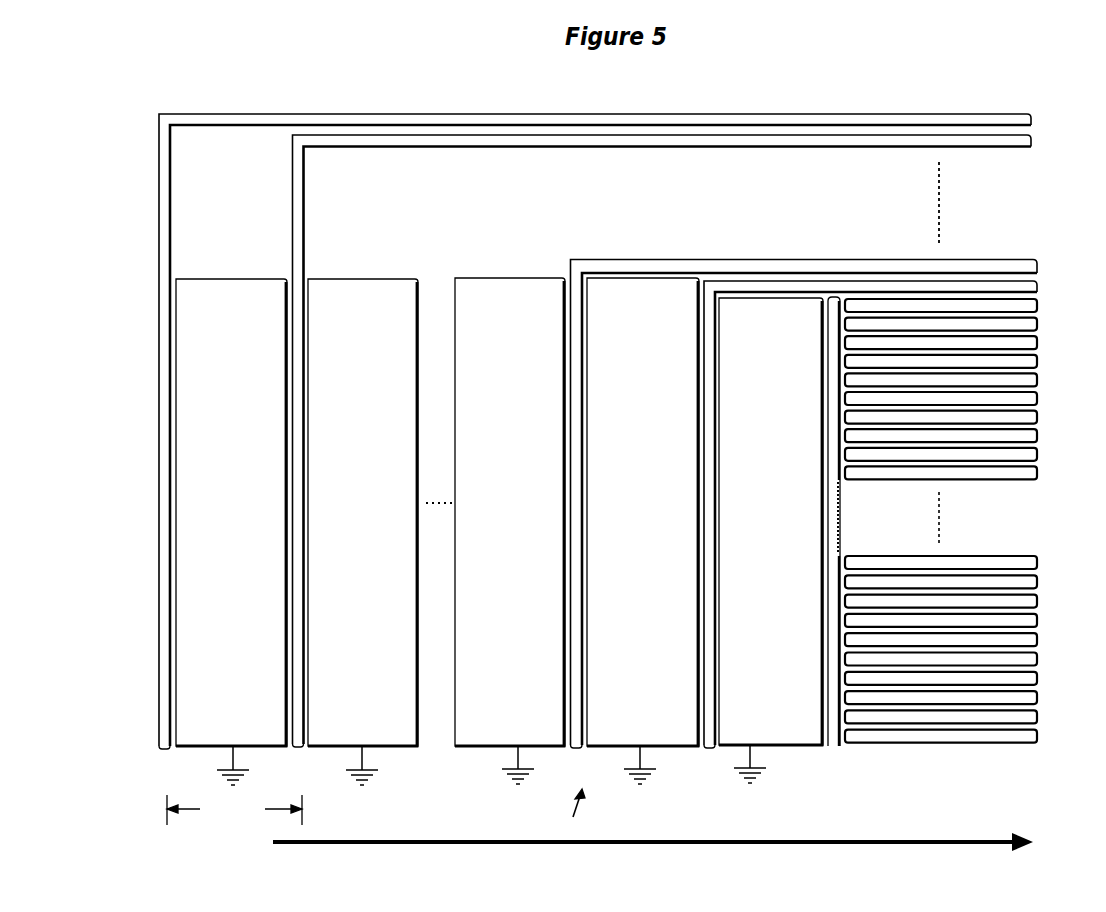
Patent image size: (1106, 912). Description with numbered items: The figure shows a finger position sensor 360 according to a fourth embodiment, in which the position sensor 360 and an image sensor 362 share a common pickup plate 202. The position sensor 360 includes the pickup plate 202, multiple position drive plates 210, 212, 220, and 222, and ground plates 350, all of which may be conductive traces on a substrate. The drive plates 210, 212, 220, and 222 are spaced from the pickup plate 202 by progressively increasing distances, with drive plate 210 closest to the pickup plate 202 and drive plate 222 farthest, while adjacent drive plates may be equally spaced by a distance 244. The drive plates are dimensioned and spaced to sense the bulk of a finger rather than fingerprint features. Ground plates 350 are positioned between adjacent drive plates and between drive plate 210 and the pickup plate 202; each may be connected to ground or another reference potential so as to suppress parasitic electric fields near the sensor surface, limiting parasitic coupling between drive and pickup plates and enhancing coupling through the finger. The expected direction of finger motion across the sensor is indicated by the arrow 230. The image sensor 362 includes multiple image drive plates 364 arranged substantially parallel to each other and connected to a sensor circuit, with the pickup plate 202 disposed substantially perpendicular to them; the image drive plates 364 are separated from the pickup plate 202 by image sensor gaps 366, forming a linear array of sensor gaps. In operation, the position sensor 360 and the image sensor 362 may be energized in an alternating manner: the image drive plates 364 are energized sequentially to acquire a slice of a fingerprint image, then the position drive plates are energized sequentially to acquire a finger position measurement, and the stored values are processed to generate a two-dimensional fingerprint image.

The pickup plate 202 is at (826, 456).
The drive plate 210 is at (704, 456).
The drive plate 212 is at (570, 456).
The drive plate 220 is at (292, 458).
The drive plate 222 is at (160, 458).
The arrow 230 is at (268, 860).
The distance 244 is at (234, 810).
The ground plates 350 is at (352, 270).
The finger position sensor 360 is at (561, 808).
The image sensor 362 is at (990, 755).
The image drive plates 364 is at (1003, 487).
The image sensor gaps 366 is at (848, 485).